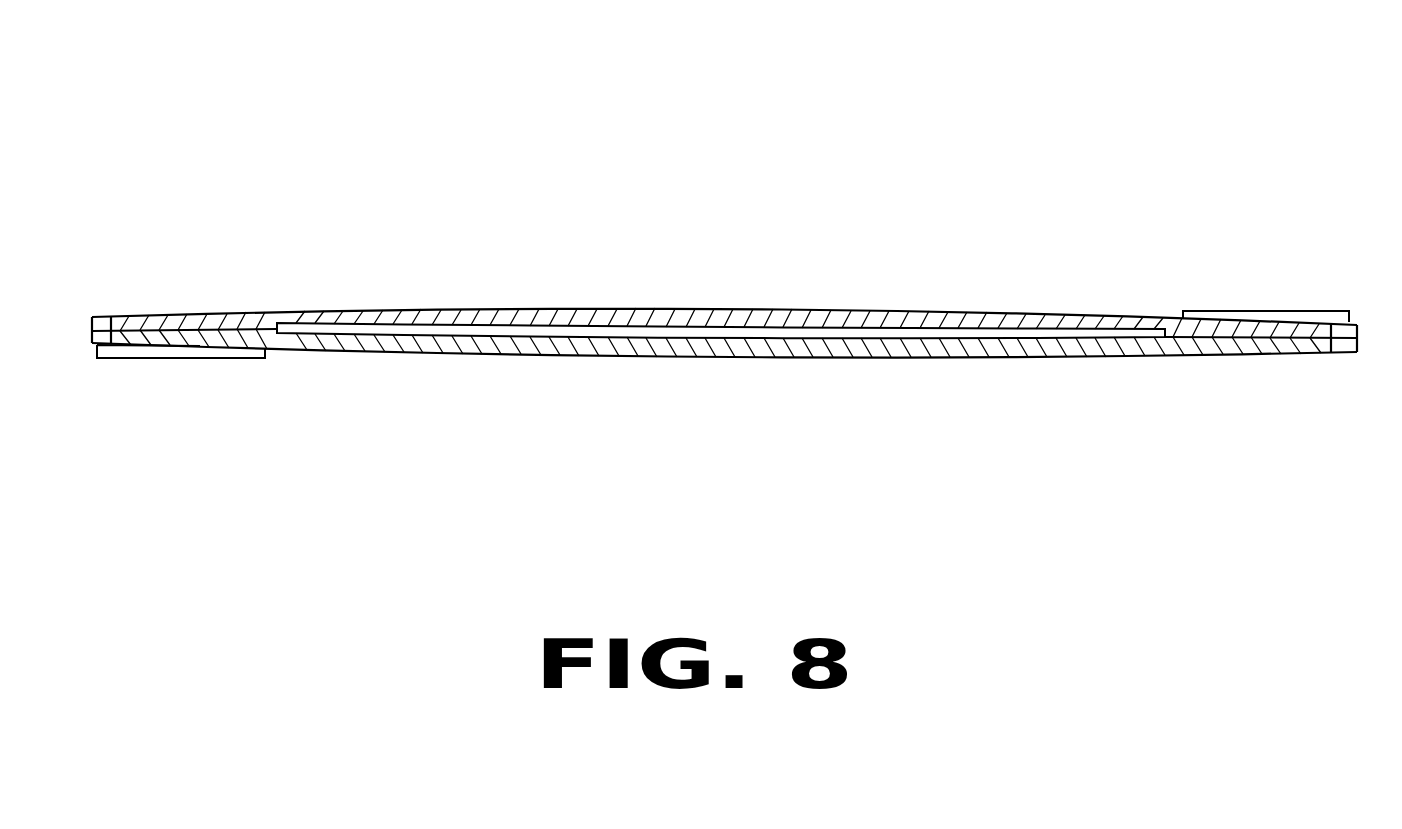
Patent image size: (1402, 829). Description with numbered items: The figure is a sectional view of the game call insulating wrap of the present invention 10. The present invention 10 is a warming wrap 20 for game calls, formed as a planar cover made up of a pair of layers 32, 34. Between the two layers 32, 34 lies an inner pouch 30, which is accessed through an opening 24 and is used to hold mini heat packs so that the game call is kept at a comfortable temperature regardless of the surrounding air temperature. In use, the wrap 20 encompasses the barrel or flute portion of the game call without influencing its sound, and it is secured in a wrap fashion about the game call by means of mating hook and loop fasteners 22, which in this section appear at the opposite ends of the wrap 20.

The present invention 10 is at (724, 287).
The warming wrap 20 is at (724, 346).
The hook and loop fasteners 22 is at (180, 360).
The opening 24 is at (724, 260).
The inner pouch 30 is at (631, 326).
The layer 32 is at (873, 310).
The layer 34 is at (877, 358).